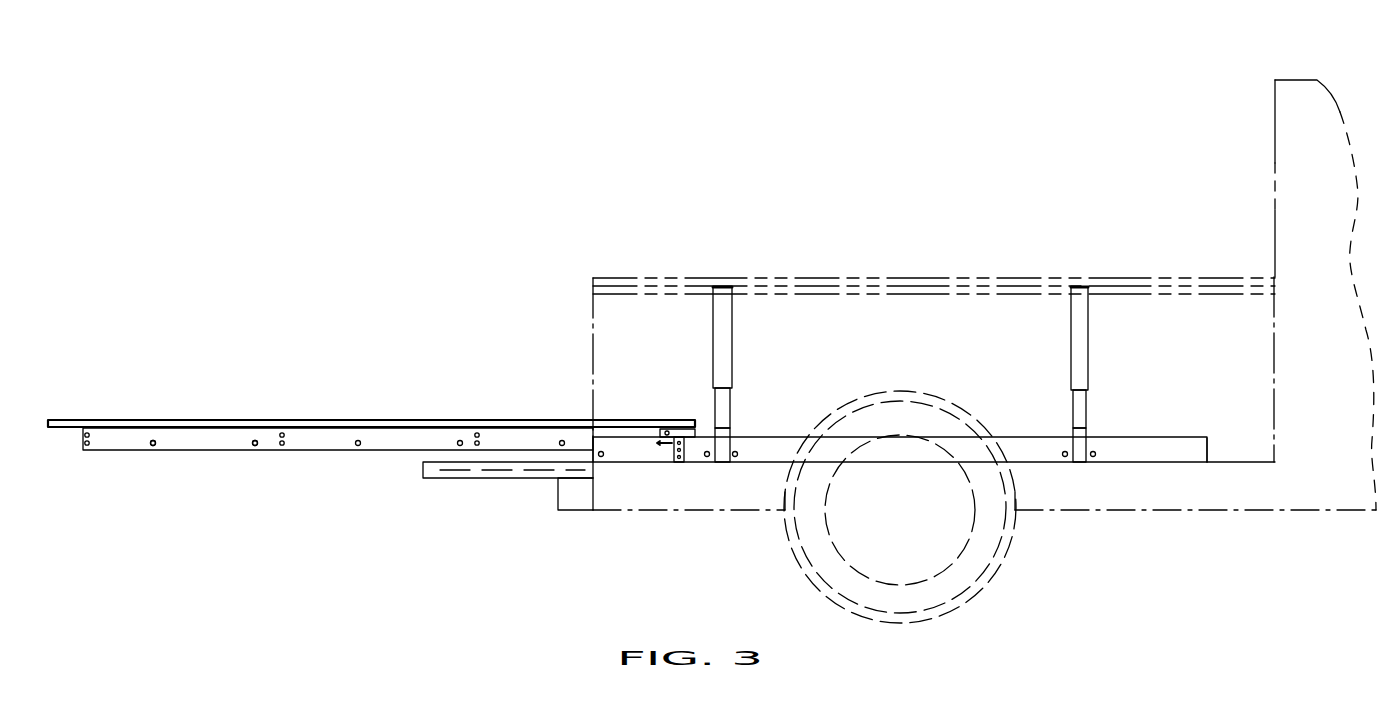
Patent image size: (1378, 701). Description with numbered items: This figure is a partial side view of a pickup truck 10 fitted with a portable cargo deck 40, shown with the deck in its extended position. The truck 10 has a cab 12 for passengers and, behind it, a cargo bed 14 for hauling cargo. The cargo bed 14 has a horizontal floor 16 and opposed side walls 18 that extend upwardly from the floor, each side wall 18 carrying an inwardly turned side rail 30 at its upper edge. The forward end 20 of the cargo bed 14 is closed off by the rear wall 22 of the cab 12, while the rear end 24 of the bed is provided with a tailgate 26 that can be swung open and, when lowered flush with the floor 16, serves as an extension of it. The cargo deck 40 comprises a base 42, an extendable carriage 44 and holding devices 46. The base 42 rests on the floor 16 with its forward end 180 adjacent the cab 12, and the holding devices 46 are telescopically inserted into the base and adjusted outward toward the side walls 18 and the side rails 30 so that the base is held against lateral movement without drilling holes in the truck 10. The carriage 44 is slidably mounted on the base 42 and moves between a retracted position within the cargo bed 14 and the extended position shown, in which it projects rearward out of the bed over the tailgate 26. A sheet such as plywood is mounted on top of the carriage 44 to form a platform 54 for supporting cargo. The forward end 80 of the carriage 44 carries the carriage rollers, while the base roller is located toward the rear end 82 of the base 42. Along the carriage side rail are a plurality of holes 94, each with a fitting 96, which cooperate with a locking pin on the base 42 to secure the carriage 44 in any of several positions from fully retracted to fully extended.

The pickup truck 10 is at (1257, 58).
The cab 12 is at (1292, 137).
The cargo bed 14 is at (1043, 270).
The floor 16 is at (1228, 465).
The side walls 18 is at (853, 332).
The forward end 20 is at (1266, 270).
The rear wall 22 is at (1276, 368).
The rear end 24 is at (581, 270).
The tailgate 26 is at (513, 480).
The side rail 30 is at (910, 286).
The portable cargo deck 40 is at (371, 418).
The base 42 is at (1108, 464).
The extendable carriage 44 is at (400, 448).
The holding devices 46 is at (733, 352).
The platform 54 is at (522, 420).
The forward end 80 is at (692, 400).
The rear end 82 is at (584, 473).
The holes 94 is at (157, 447).
The fitting 96 is at (155, 438).
The forward end 180 is at (1213, 446).